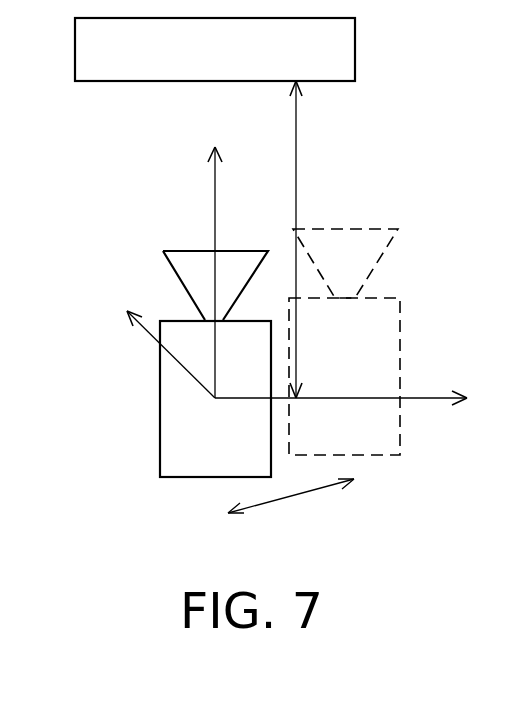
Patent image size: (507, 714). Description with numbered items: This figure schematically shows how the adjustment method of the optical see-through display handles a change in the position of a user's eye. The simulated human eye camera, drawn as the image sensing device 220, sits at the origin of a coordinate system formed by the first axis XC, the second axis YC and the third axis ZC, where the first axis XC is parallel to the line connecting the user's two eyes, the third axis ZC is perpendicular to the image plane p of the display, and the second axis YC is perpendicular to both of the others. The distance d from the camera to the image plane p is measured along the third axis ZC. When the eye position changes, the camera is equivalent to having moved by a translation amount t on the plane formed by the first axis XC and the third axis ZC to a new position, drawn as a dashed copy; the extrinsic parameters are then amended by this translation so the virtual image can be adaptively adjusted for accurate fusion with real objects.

The image sensing device 220 is at (170, 439).
The image plane p is at (201, 45).
The distance from the simulated human eye camera to the image plane d is at (360, 180).
The translation amount t is at (315, 522).
The X_C axis XC is at (346, 421).
The Y_C axis YC is at (150, 342).
The Z_C axis ZC is at (198, 271).